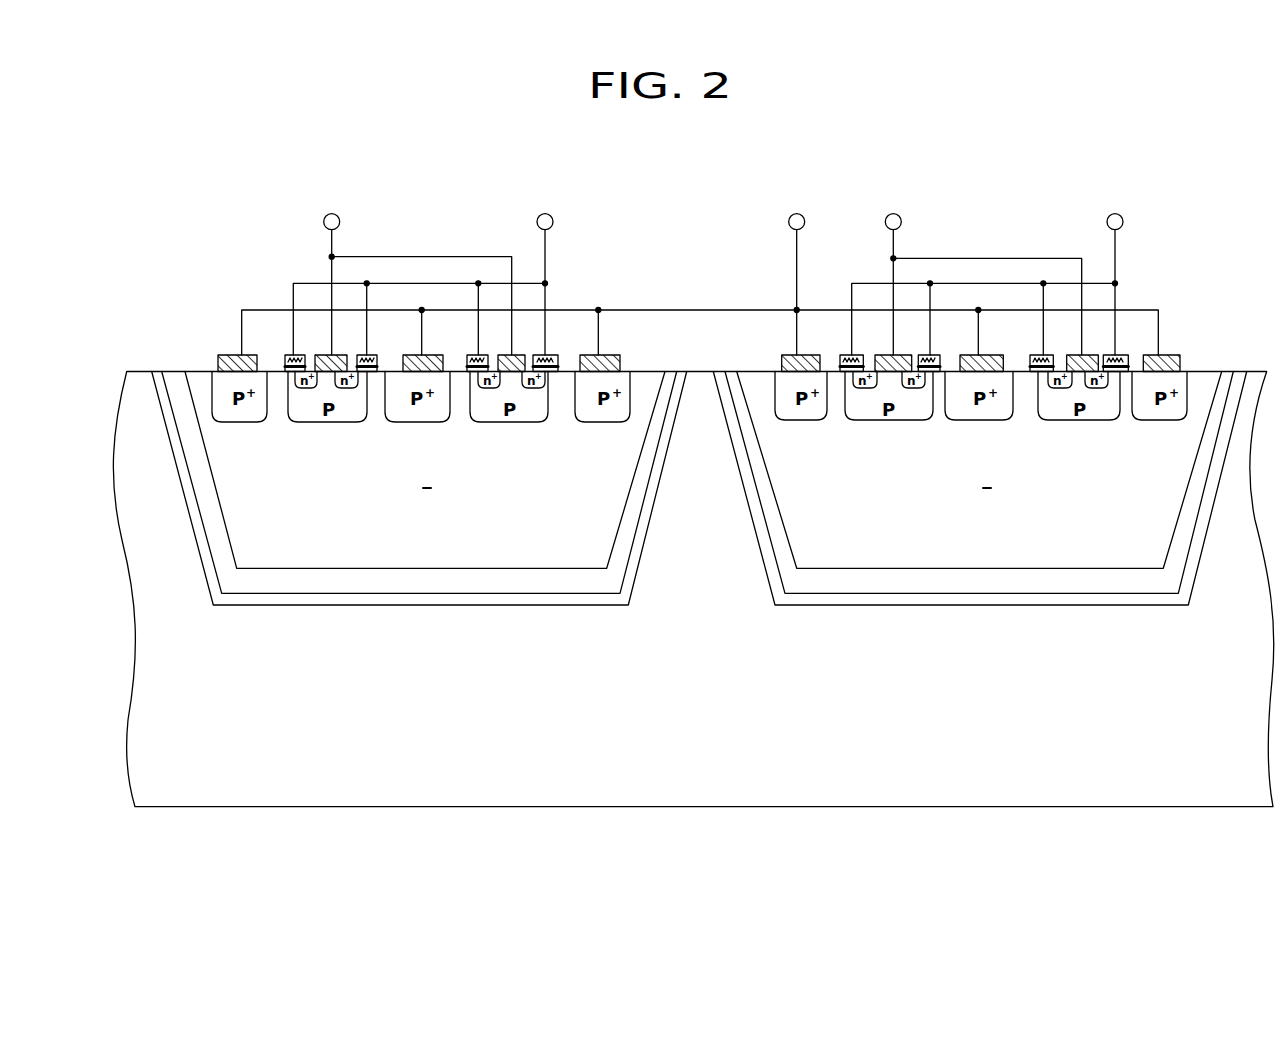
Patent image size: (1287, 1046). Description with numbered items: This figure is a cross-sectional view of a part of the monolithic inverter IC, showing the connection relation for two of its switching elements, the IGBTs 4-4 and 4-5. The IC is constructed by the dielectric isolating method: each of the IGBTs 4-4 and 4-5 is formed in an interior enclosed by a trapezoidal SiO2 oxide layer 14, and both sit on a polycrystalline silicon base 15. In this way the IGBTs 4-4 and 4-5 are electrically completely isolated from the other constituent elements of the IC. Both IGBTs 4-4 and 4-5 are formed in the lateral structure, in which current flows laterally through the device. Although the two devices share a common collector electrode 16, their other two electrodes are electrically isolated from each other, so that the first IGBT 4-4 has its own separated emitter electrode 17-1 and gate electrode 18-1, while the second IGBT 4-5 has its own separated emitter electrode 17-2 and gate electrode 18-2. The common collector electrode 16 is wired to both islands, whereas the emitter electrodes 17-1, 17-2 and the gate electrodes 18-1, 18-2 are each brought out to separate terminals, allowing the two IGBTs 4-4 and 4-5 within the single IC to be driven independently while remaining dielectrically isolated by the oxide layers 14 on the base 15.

The emitter electrode 17-1 is at (323, 222).
The gate electrode 18-1 is at (537, 222).
The collector electrode 16 is at (789, 217).
The emitter electrode 17-2 is at (885, 221).
The gate electrode 18-2 is at (1105, 221).
The IGBT 4-4 is at (318, 558).
The IGBT 4-5 is at (1072, 555).
The SiO2 oxide layer 14 is at (425, 597).
The base 15 is at (777, 790).